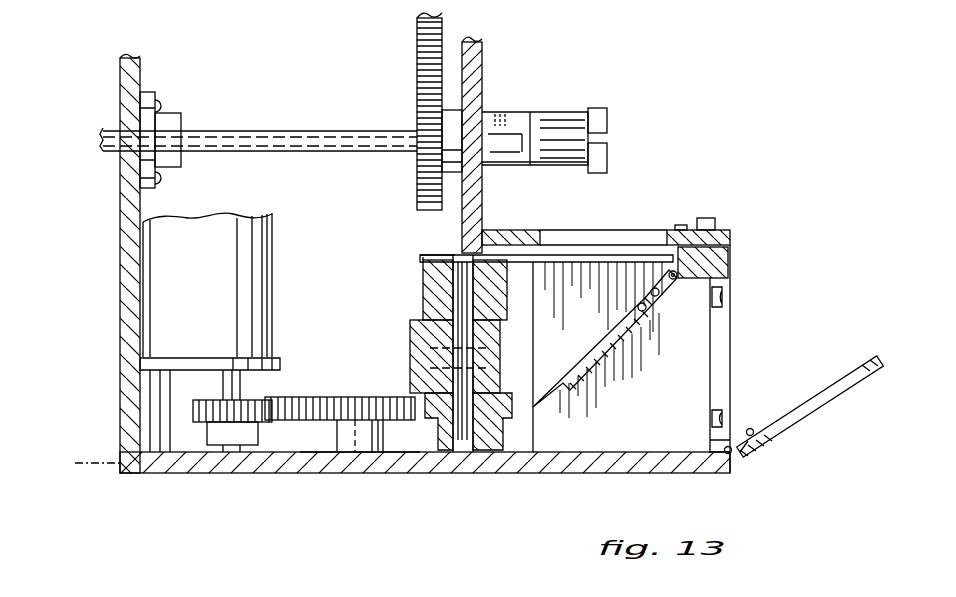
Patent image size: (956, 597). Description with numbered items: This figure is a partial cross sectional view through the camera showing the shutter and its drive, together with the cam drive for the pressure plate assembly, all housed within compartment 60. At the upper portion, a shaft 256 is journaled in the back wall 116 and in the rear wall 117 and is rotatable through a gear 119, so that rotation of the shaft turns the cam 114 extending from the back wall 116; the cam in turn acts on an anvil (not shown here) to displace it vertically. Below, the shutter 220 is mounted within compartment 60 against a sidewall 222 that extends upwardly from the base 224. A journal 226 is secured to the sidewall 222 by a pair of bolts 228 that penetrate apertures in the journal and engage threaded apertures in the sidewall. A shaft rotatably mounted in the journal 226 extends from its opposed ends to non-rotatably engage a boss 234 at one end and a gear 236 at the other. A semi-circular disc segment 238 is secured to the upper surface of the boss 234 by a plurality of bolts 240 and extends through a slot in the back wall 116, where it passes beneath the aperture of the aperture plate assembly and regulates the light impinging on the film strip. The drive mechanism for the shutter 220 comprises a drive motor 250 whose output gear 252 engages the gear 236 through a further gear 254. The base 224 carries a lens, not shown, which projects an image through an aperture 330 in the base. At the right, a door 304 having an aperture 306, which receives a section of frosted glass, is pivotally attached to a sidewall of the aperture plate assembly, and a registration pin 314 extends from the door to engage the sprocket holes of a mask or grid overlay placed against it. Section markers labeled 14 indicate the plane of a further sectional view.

The section line 14 is at (100, 243).
The compartment 60 is at (118, 345).
The cam 114 is at (596, 108).
The back wall 116 is at (476, 92).
The rear wall 117 is at (140, 207).
The drive gear 119 is at (417, 83).
The shutter 220 is at (420, 268).
The sidewall 222 is at (465, 440).
The base 224 is at (390, 462).
The journal 226 is at (412, 335).
The bolts 228 is at (418, 348).
The boss 234 is at (423, 295).
The gear 236 is at (447, 438).
The disc segment 238 is at (434, 254).
The bolts 240 is at (440, 258).
The drive motor 250 is at (165, 285).
The output gear 252 is at (205, 411).
The further gear 254 is at (308, 430).
The shaft 256 is at (245, 128).
The door 304 is at (736, 452).
The aperture 306 is at (855, 384).
The registration pin 314 is at (751, 429).
The aperture 330 is at (667, 462).